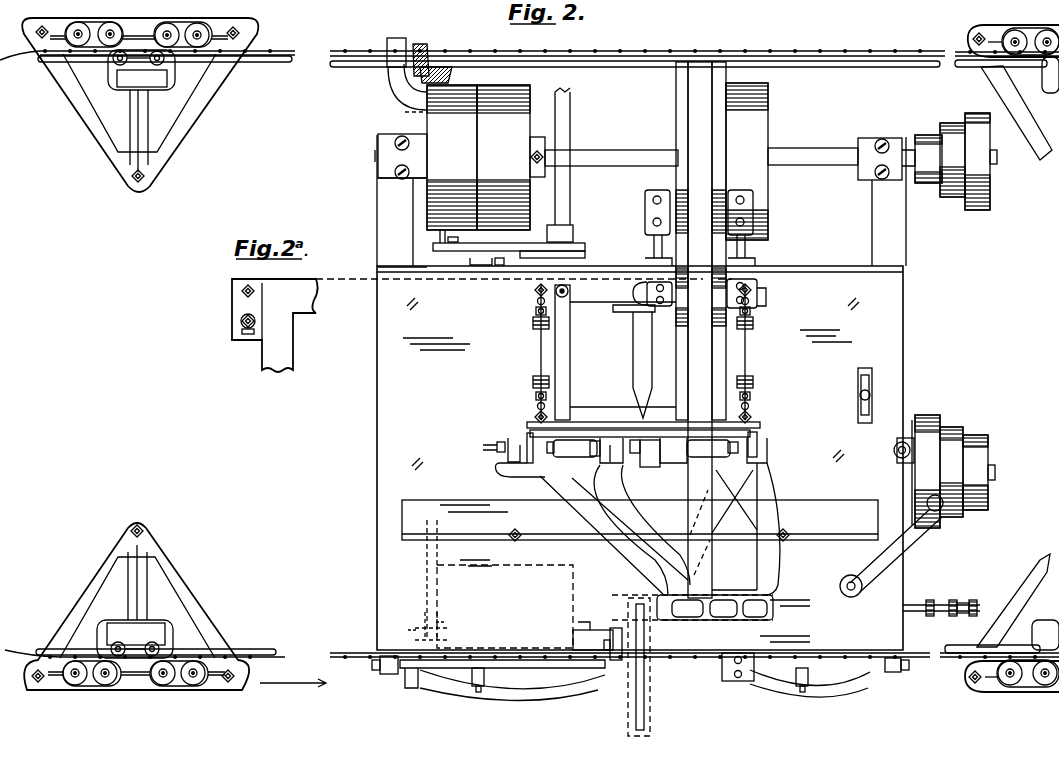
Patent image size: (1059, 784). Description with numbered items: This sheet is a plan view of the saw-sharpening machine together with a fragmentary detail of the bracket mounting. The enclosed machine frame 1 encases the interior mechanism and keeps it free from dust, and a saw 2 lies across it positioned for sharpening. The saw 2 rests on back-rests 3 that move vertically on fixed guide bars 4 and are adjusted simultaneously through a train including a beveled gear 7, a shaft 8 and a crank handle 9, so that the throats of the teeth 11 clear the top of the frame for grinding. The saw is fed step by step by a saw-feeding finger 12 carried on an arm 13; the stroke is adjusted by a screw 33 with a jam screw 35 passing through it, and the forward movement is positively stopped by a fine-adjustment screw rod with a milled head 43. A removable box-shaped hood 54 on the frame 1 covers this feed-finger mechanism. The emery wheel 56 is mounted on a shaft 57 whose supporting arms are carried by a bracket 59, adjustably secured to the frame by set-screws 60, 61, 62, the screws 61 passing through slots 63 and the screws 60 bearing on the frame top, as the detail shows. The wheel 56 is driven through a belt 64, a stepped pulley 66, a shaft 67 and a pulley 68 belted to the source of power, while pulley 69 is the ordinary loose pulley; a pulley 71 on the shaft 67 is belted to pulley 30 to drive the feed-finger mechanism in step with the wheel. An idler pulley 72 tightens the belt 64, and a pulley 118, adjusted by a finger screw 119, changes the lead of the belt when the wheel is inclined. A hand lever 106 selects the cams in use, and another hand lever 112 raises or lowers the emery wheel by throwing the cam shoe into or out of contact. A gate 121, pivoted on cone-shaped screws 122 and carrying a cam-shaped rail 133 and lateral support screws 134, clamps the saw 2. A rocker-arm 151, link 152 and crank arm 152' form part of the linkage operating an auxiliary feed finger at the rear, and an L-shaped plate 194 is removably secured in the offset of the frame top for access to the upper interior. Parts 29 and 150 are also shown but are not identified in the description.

In FIG. 2, the machine frame 1 is at (393, 392).
In FIG. 2, the saw 2 is at (752, 50).
In FIG. 2, the back-rests 3 is at (103, 60).
In FIG. 2, the vertical guide bars 4 is at (188, 121).
In FIG. 2, the beveled gear 7 is at (421, 50).
In FIG. 2, the shaft 8 is at (345, 63).
In FIG. 2, the crank handle 9 is at (906, 537).
In FIG. 2, the teeth 11 is at (643, 52).
In FIG. 2, the saw-feeding finger 12 is at (612, 663).
In FIG. 2, the arm 13 is at (583, 640).
In FIG. 2, the drum 29 is at (996, 475).
In FIG. 2, the pulley 30 is at (932, 445).
In FIG. 2, the screw 33 is at (955, 600).
In FIG. 2, the jam screw 35 is at (977, 606).
In FIG. 2, the milled head 43 is at (932, 600).
In FIG. 2, the box-shaped hood 54 is at (500, 584).
In FIG. 2, the emery wheel 56 is at (647, 726).
In FIG. 2, the shaft 57 is at (734, 681).
In FIG. 2, the bracket 59 is at (525, 426).
In FIG. 2A, the bracket 59 is at (287, 347).
In FIG. 2, the set-screws 60 is at (534, 289).
In FIG. 2A, the set-screws 60 is at (240, 290).
In FIG. 2, the set-screws 61 is at (536, 300).
In FIG. 2A, the set-screws 61 is at (240, 320).
In FIG. 2, the set-screws 62 is at (541, 374).
In FIG. 2, the slots 63 is at (536, 309).
In FIG. 2A, the slots 63 is at (242, 333).
In FIG. 2, the belt 64 is at (700, 163).
In FIG. 2, the pulley 66 is at (688, 103).
In FIG. 2, the shaft 67 is at (830, 166).
In FIG. 2, the pulley 68 is at (503, 157).
In FIG. 2, the loose pulley 69 is at (452, 157).
In FIG. 2, the pulley 71 is at (985, 190).
In FIG. 2, the idler pulley 72 is at (683, 231).
In FIG. 2, the hand lever 106 is at (873, 390).
In FIG. 2, the hand lever 112 is at (905, 447).
In FIG. 2, the pulley 118 is at (727, 273).
In FIG. 2, the finger screw 119 is at (672, 270).
In FIG. 2, the gate 121 is at (448, 672).
In FIG. 2, the cone-shaped screws 122 is at (386, 675).
In FIG. 2, the arc-shaped rail 133 is at (532, 676).
In FIG. 2, the adjustable screws 134 is at (477, 690).
In FIG. 2, the post 150 is at (572, 132).
In FIG. 2, the rocker-arm 151 is at (575, 231).
In FIG. 2, the link 152 is at (509, 243).
In FIG. 2, the crank arm 152' is at (489, 263).
In FIG. 2, the L-shaped plate 194 is at (640, 520).